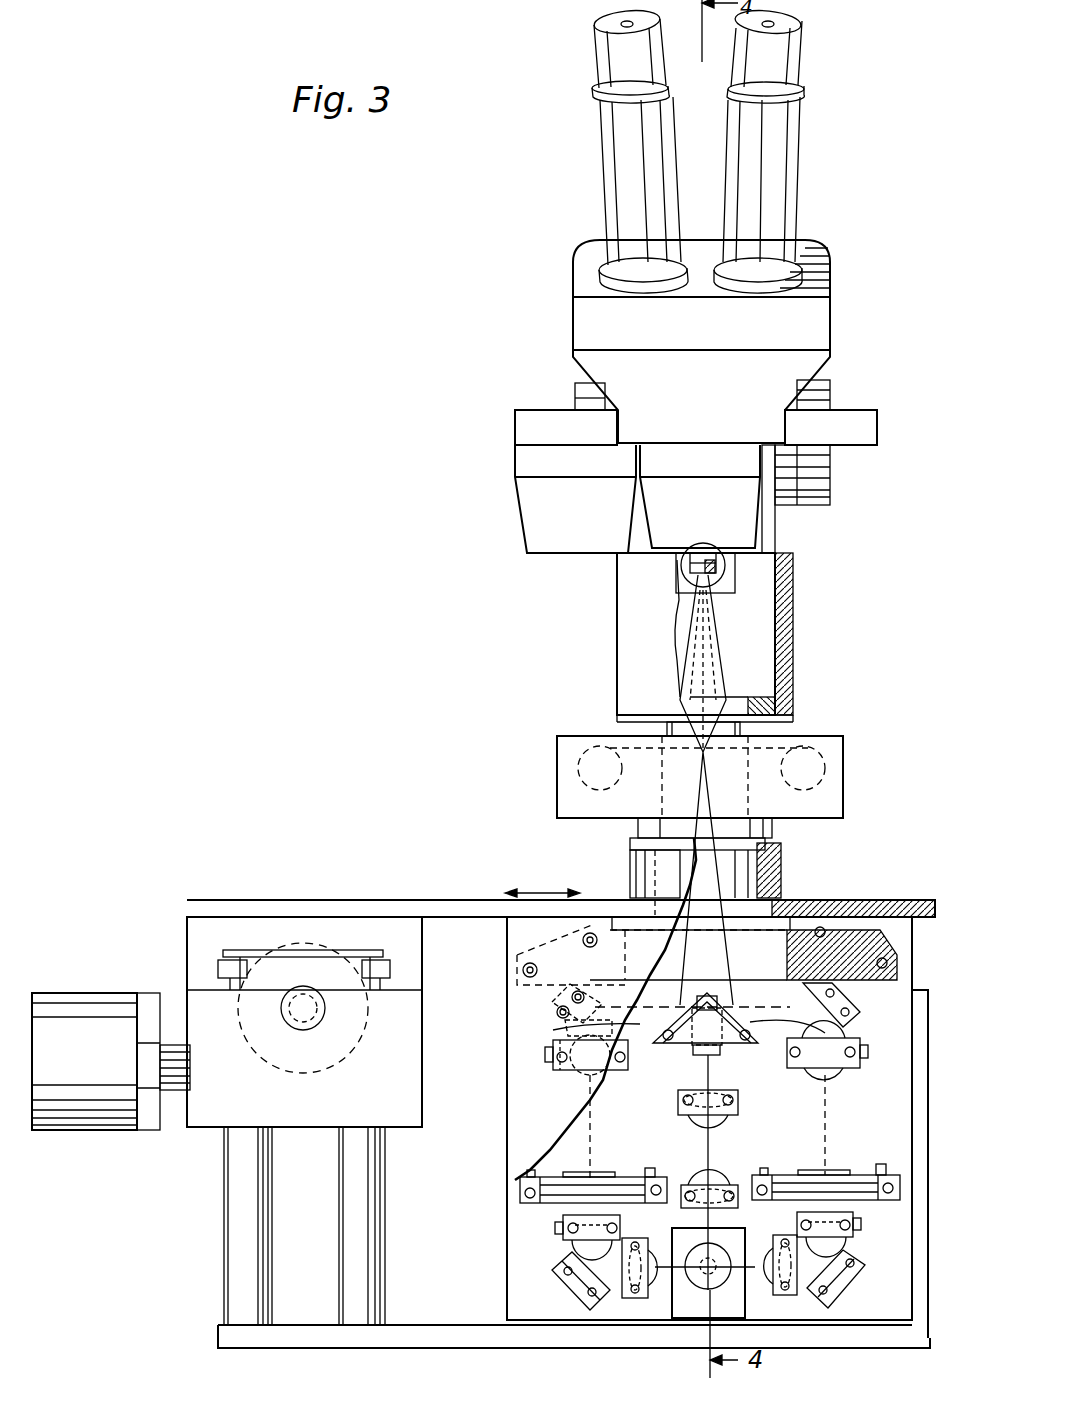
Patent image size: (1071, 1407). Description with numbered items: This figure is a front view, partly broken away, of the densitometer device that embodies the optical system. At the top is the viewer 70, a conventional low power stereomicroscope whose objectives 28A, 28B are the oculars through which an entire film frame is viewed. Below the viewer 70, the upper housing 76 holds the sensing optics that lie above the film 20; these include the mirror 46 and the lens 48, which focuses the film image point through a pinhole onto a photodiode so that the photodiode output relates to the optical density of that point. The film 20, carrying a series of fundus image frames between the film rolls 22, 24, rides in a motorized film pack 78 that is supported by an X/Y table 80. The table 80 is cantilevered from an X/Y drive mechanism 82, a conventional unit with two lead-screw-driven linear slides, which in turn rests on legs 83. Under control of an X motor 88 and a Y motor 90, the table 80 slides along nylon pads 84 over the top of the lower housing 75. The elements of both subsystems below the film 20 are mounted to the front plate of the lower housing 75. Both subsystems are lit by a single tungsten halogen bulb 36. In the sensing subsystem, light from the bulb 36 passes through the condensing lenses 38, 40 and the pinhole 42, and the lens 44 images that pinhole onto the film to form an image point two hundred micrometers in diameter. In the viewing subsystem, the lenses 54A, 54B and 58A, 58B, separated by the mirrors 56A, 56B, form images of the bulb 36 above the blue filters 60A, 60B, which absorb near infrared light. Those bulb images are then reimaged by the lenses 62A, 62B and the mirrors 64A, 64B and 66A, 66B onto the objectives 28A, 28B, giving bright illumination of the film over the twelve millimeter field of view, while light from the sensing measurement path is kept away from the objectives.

The film 20 is at (780, 748).
The film roll 22 is at (578, 770).
The film roll 24 is at (828, 772).
The stereomicroscope objective 28A is at (772, 24).
The stereomicroscope objective 28B is at (624, 22).
The tungsten halogen bulb 36 is at (708, 1298).
The condensing lens 38 is at (718, 1180).
The condensing lens 40 is at (736, 1117).
The pinhole 42 is at (722, 1050).
The lens 44 is at (720, 995).
The mirror 46 is at (716, 575).
The lens 48 is at (735, 580).
The lens 54A is at (634, 1300).
The lens 54B is at (790, 1300).
The mirror 56A is at (560, 1290).
The mirror 56B is at (860, 1283).
The lens 58A is at (562, 1235).
The lens 58B is at (855, 1232).
The blue filter 60A is at (606, 1175).
The blue filter 60B is at (846, 1170).
The lens 62A is at (560, 1073).
The lens 62B is at (838, 1070).
The mirror 64A is at (562, 1000).
The mirror 64B is at (848, 1002).
The mirror 66A is at (604, 1032).
The mirror 66B is at (846, 1040).
The viewer 70 is at (540, 299).
The lower housing 75 is at (930, 1012).
The upper housing 76 is at (794, 600).
The motorized film pack 78 is at (843, 808).
The X/Y table 80 is at (487, 900).
The X/Y drive mechanism 82 is at (170, 926).
The legs 83 is at (346, 1240).
The nylon pad 84 is at (595, 917).
The X motor 88 is at (108, 1125).
The Y motor 90 is at (365, 1028).